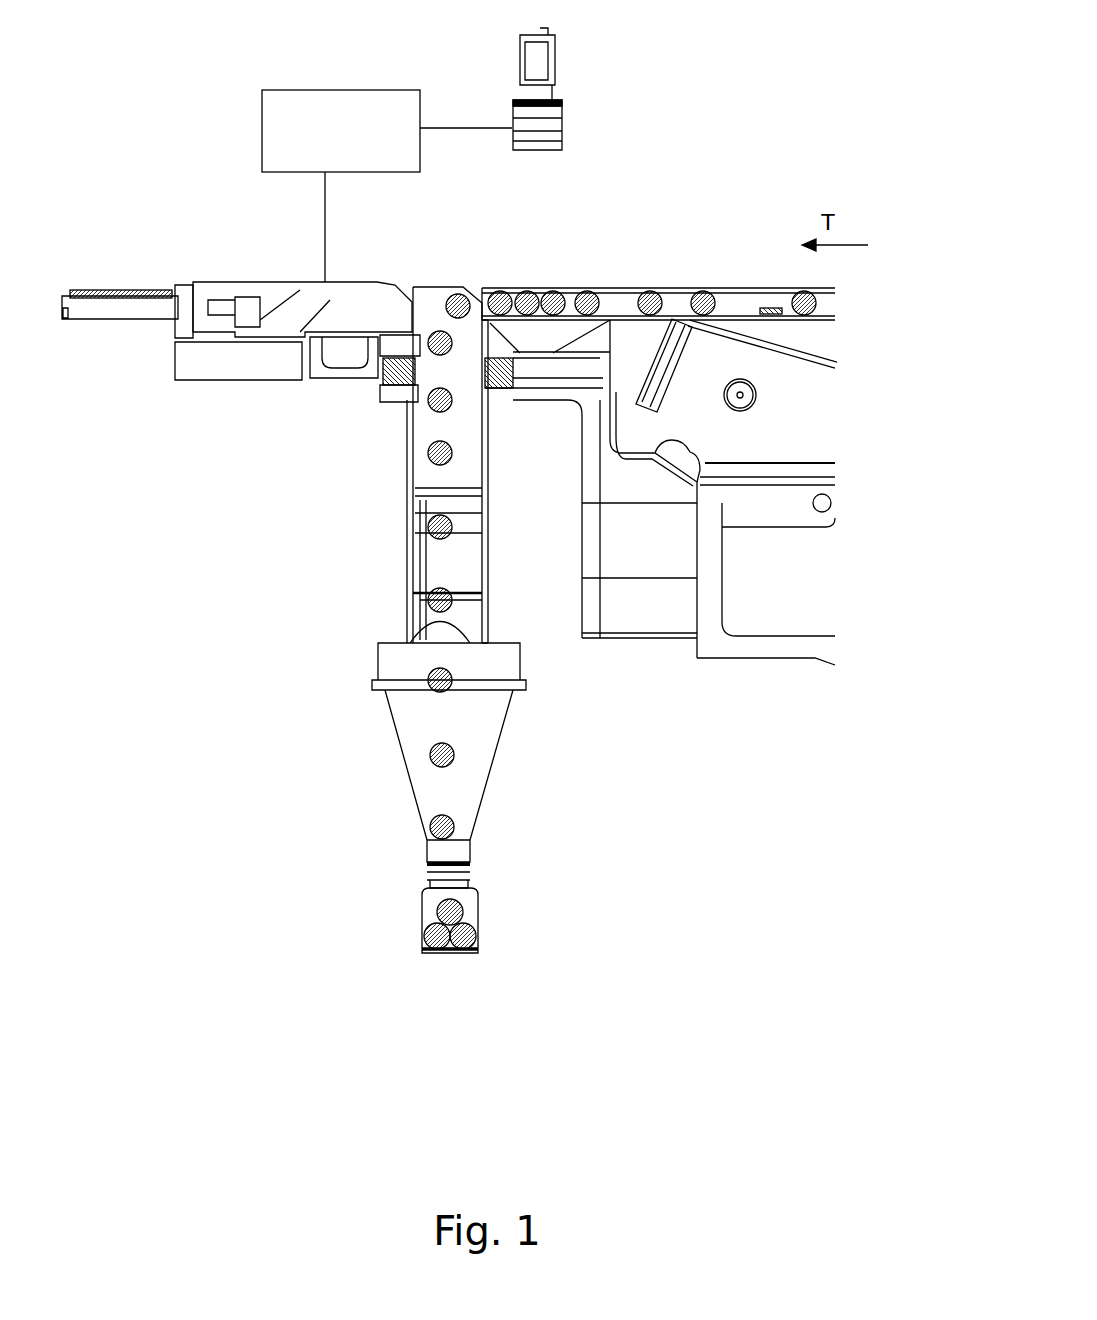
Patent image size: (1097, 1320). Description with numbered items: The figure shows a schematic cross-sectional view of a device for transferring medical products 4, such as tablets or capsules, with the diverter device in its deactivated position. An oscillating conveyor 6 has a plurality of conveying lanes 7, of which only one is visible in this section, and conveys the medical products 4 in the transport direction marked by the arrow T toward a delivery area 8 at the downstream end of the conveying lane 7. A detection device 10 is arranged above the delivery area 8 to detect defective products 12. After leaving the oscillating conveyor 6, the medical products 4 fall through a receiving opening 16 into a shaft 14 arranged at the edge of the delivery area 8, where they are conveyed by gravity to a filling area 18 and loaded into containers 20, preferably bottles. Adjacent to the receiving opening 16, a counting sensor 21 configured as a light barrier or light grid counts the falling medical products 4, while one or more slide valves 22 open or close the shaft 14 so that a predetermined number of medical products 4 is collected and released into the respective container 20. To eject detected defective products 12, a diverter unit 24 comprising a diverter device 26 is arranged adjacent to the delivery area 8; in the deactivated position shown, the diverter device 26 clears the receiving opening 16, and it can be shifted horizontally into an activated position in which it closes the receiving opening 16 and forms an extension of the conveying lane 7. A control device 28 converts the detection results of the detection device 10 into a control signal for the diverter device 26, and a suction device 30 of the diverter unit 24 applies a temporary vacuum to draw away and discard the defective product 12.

The medical products 4 is at (702, 300).
The oscillating conveyor 6 is at (768, 310).
The conveying lane 7 is at (727, 303).
The delivery area 8 is at (609, 238).
The detection device 10 is at (533, 65).
The defective product 12 is at (753, 297).
The shaft 14 is at (463, 420).
The receiving opening 16 is at (445, 333).
The filling area 18 is at (480, 740).
The container 20 is at (459, 898).
The counting sensor 21 is at (382, 387).
The slide valve 22 is at (460, 595).
The diverter unit 24 is at (190, 222).
The diverter device 26 is at (311, 300).
The control device 28 is at (387, 186).
The suction device 30 is at (345, 345).